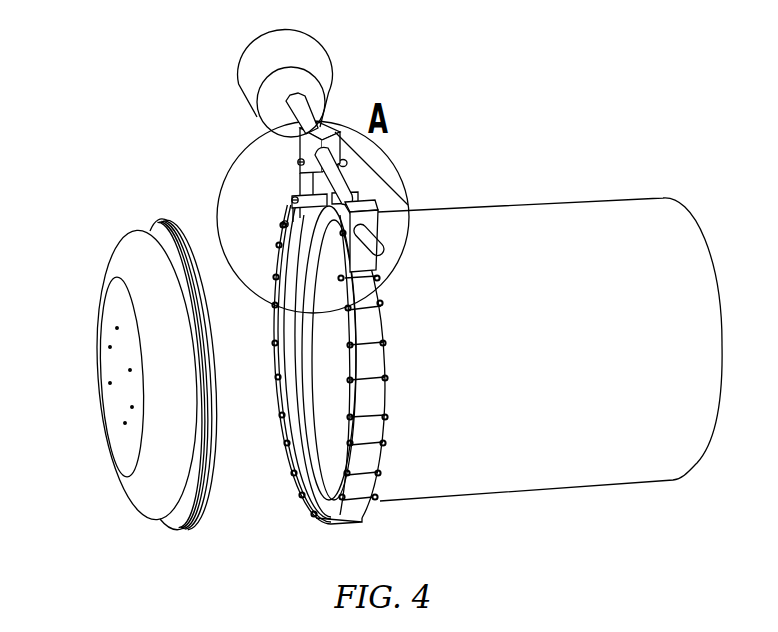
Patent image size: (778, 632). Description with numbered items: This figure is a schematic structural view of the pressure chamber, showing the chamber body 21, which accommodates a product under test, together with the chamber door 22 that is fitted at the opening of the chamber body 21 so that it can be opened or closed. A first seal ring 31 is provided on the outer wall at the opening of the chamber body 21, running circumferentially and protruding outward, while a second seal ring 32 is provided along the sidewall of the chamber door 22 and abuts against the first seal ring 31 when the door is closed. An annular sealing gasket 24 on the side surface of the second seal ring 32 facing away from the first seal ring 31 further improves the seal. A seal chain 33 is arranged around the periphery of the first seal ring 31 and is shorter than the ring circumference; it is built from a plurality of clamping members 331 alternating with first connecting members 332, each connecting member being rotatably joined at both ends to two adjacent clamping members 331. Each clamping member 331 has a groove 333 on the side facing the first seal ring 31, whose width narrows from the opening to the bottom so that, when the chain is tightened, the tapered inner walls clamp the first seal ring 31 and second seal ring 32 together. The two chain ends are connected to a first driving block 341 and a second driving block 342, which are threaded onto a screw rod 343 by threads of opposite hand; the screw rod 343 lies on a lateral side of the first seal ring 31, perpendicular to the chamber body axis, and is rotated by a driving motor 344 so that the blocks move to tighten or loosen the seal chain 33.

The chamber body 21 is at (513, 230).
The chamber door 22 is at (152, 273).
The annular sealing gasket 24 is at (208, 321).
The first seal ring 31 is at (330, 197).
The second seal ring 32 is at (208, 364).
The seal chain 33 is at (393, 425).
The clamping member 331 is at (290, 200).
The first connecting member 332 is at (272, 253).
The groove 333 is at (298, 188).
The first driving block 341 is at (335, 123).
The second driving block 342 is at (360, 208).
The screw rod 343 is at (343, 165).
The driving motor 344 is at (270, 60).